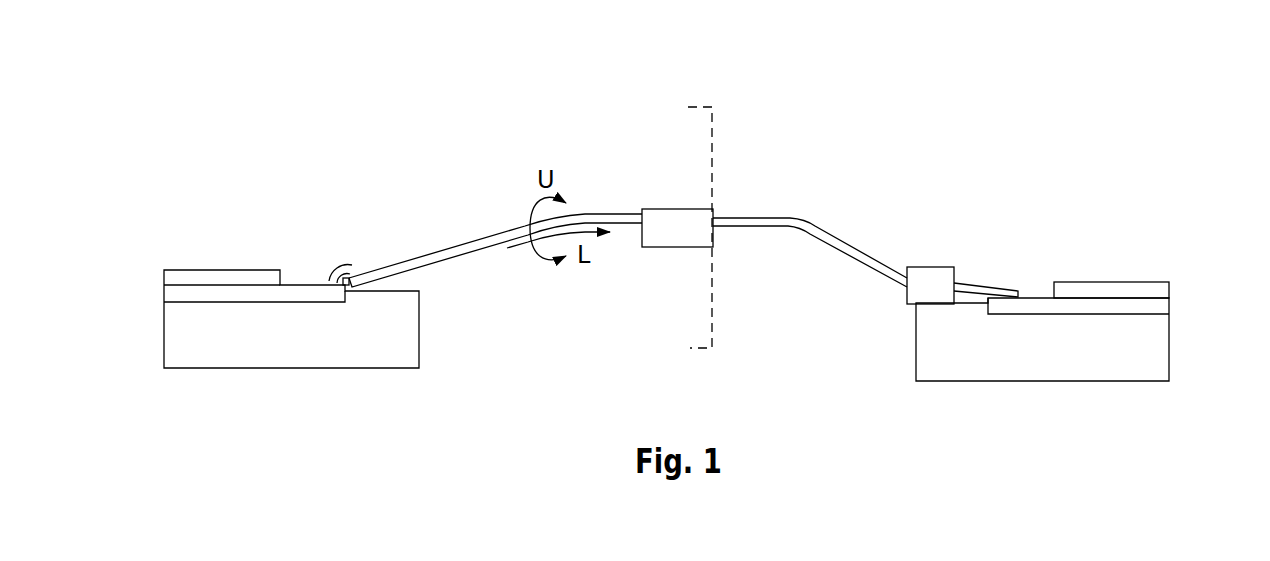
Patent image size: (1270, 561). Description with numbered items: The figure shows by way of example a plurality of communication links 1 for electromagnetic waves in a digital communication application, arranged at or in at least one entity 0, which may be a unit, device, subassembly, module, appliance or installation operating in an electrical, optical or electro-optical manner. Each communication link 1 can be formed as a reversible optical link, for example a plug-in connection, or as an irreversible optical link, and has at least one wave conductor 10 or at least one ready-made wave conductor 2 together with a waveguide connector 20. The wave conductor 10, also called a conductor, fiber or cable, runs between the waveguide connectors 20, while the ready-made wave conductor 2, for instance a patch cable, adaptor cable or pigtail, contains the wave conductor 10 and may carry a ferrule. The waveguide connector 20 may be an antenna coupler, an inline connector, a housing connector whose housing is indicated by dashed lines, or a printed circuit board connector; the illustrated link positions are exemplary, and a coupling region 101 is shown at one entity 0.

The entity 0 is at (243, 70).
The communication link 1 is at (683, 247).
The ready-made wave conductor 2 is at (510, 223).
The wave conductor 10 is at (473, 246).
The waveguide connector 20 is at (347, 273).
The optical coupling point 101 is at (343, 282).